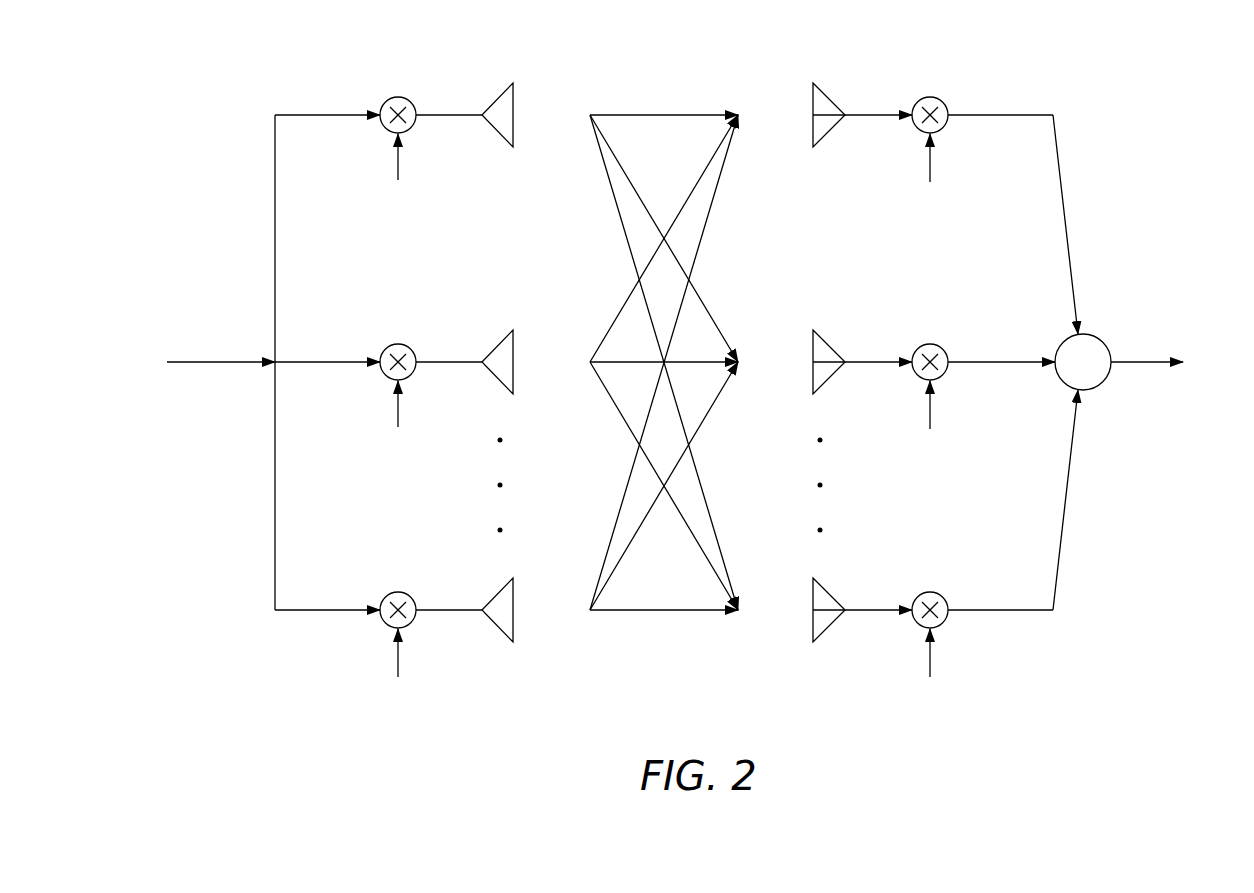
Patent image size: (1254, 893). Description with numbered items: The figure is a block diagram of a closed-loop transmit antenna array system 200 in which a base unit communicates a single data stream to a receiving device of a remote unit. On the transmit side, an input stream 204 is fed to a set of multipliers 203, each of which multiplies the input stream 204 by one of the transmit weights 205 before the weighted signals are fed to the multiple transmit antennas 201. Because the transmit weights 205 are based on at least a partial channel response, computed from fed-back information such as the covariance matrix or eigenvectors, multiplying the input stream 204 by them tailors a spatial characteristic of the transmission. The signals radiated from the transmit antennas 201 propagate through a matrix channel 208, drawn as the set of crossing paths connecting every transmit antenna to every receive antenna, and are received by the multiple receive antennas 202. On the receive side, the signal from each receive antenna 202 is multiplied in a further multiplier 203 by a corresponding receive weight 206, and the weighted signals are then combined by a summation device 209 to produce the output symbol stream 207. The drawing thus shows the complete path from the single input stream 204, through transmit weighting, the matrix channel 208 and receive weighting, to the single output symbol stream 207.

The MIMO transceiver system 200 is at (1236, 88).
The transmit antennas 201 is at (514, 143).
The receive antennas 202 is at (812, 100).
The multipliers 203 is at (390, 100).
The input stream 204 is at (180, 443).
The transmit weights 205 is at (418, 196).
The receive weights 206 is at (903, 197).
The output symbol stream 207 is at (1166, 444).
The matrix channel 208 is at (665, 112).
The summation device 209 is at (1100, 341).